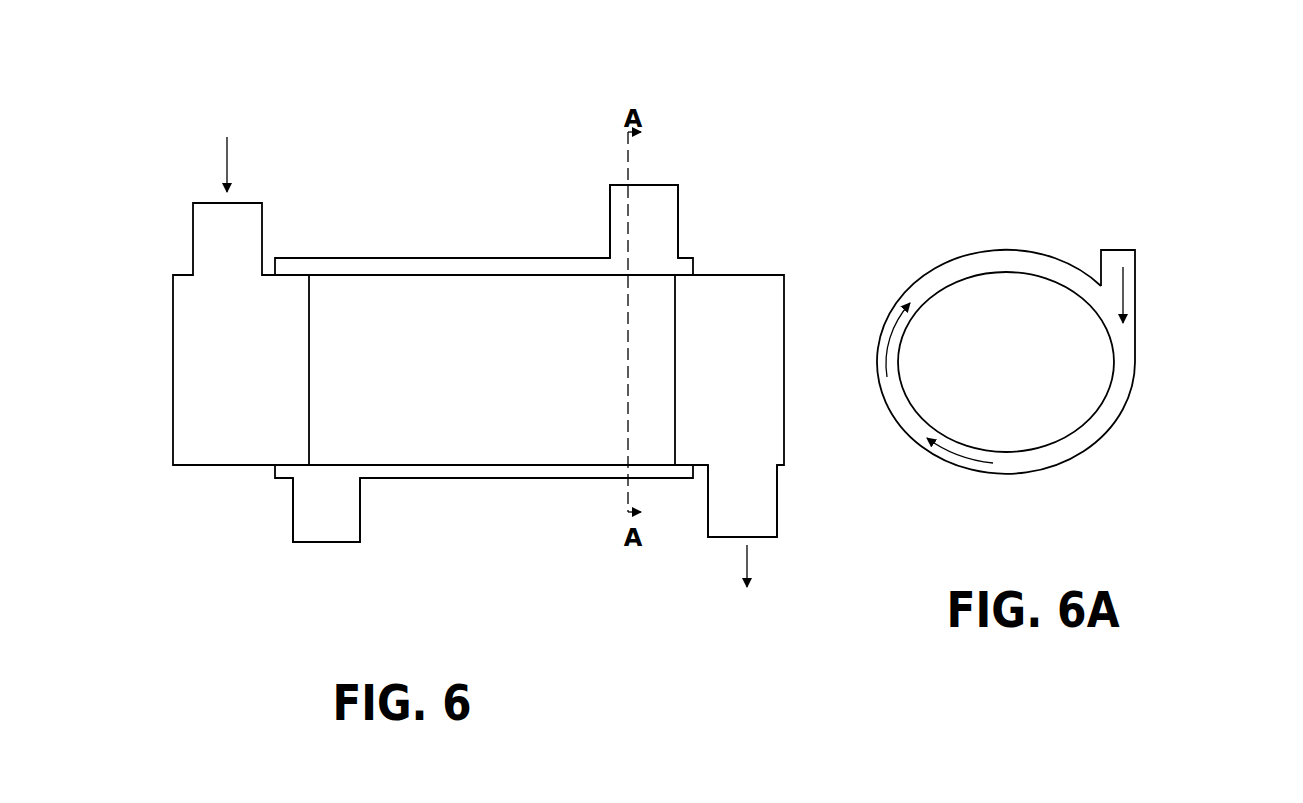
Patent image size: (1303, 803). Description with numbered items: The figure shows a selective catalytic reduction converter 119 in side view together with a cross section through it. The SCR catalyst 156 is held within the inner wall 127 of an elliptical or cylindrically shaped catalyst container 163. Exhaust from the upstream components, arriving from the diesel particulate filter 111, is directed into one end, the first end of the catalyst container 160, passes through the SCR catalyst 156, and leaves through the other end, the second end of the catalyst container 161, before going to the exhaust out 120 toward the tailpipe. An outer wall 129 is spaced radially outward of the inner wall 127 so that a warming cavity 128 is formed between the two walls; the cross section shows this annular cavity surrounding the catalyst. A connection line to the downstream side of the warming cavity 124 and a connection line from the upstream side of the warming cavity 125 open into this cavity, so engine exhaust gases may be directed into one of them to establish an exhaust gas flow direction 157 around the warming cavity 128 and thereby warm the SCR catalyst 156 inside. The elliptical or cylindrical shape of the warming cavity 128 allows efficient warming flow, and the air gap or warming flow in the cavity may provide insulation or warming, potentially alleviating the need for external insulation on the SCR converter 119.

In FIG. 6, the diesel particulate filter 111 is at (227, 118).
In FIG. 6, the selective catalytic reduction converter 119 is at (770, 275).
In FIG. 6, the exhaust out 120 is at (749, 574).
In FIG. 6, the connection line to downstream side of the warming cavity 124 is at (678, 203).
In FIG. 6A, the connection line to downstream side of the warming cavity 124 is at (1135, 263).
In FIG. 6, the connection line from upstream side of the warming cavity 125 is at (292, 512).
In FIG. 6, the inner wall 127 is at (510, 277).
In FIG. 6A, the inner wall 127 is at (1045, 450).
In FIG. 6, the warming cavity 128 is at (465, 265).
In FIG. 6A, the warming cavity 128 is at (1093, 437).
In FIG. 6, the outer wall 129 is at (358, 260).
In FIG. 6A, the outer wall 129 is at (1118, 393).
In FIG. 6, the selective catalytic reduction catalyst 156 is at (462, 425).
In FIG. 6A, the selective catalytic reduction catalyst 156 is at (997, 350).
In FIG. 6A, the exhaust gas flow direction 157 is at (1137, 303).
In FIG. 6, the first end of the catalyst container 160 is at (309, 400).
In FIG. 6, the second end of the catalyst container 161 is at (675, 330).
In FIG. 6, the catalyst container 163 is at (400, 467).